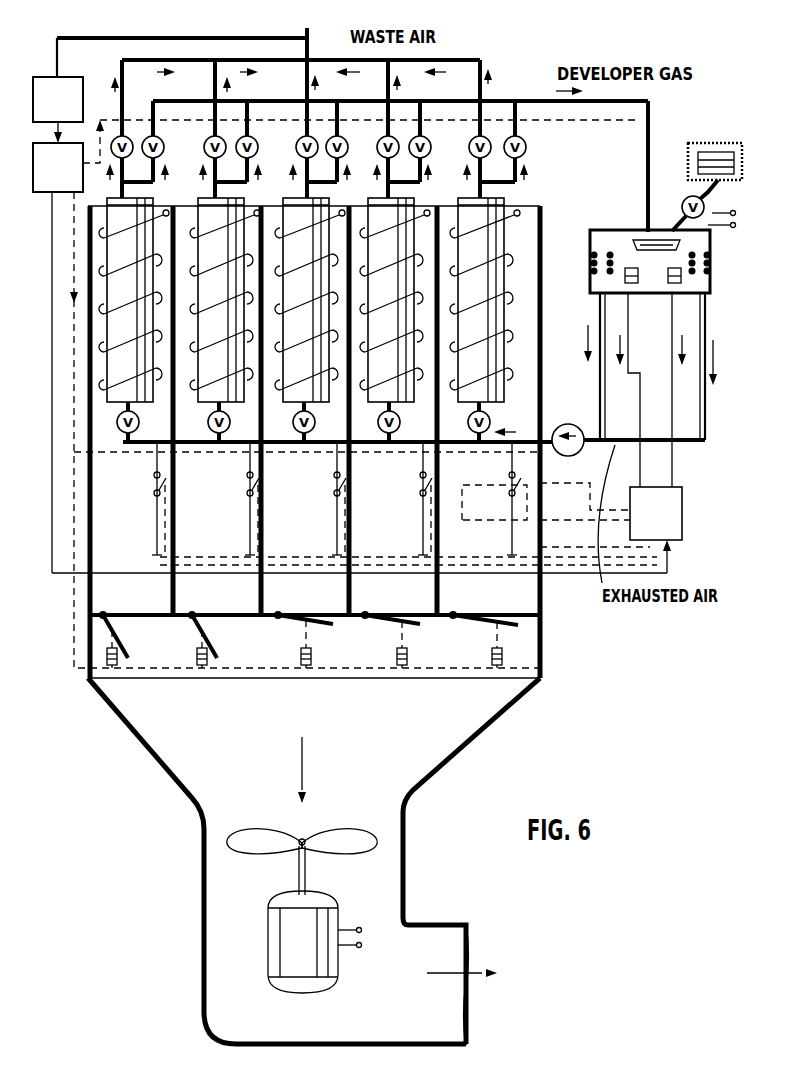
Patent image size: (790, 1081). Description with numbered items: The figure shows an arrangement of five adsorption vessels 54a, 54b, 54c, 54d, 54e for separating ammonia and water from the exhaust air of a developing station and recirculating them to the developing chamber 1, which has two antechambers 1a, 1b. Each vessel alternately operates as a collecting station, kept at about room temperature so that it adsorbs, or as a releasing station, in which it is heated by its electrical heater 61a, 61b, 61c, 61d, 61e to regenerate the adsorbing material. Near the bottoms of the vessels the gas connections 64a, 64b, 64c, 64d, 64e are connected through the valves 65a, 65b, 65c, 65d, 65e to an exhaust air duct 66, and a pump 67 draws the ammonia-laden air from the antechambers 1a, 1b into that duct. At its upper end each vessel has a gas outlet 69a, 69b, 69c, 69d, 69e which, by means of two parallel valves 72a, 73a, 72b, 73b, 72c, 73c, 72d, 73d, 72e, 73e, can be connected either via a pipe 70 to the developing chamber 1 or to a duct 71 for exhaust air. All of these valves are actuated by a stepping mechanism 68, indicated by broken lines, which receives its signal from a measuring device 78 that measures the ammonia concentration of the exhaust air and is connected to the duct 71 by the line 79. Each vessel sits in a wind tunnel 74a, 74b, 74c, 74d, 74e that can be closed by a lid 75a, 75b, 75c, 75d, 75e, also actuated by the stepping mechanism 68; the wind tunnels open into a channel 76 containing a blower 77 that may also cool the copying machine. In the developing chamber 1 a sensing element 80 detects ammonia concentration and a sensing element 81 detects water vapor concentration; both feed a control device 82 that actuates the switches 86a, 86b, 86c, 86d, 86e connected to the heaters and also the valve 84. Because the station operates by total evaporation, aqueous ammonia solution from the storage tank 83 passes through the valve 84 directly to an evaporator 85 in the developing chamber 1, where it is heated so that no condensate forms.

The developing chamber 1 is at (654, 273).
The antechamber 1a is at (600, 277).
The antechamber 1b is at (700, 281).
The adsorption vessel 54a is at (139, 243).
The adsorption vessel 54b is at (230, 243).
The adsorption vessel 54c is at (315, 243).
The adsorption vessel 54d is at (400, 243).
The adsorption vessel 54e is at (490, 243).
The electrical heater 61a is at (131, 305).
The electrical heater 61b is at (222, 305).
The electrical heater 61c is at (307, 305).
The electrical heater 61d is at (392, 305).
The electrical heater 61e is at (482, 305).
The gas connection 64a is at (118, 412).
The gas connection 64b is at (209, 420).
The gas connection 64c is at (294, 420).
The gas connection 64d is at (379, 420).
The gas connection 64e is at (495, 412).
The valve 65a is at (158, 480).
The valve 65b is at (246, 479).
The valve 65c is at (333, 478).
The valve 65d is at (419, 478).
The valve 65e is at (509, 478).
The exhaust air duct 66 is at (546, 456).
The pump 67 is at (574, 424).
The stepping mechanism 68 is at (48, 185).
The gas outlet 69a is at (120, 190).
The gas outlet 69b is at (212, 189).
The gas outlet 69c is at (300, 190).
The gas outlet 69d is at (408, 187).
The gas outlet 69e is at (492, 187).
The pipe 70 is at (527, 99).
The duct for exhaust air 71 is at (313, 34).
The valve 72a is at (118, 134).
The valve 72b is at (207, 150).
The valve 72c is at (299, 154).
The valve 72d is at (385, 151).
The valve 72e is at (470, 151).
The valve 73a is at (158, 141).
The valve 73b is at (254, 142).
The valve 73c is at (345, 146).
The valve 73d is at (428, 144).
The valve 73e is at (527, 143).
The wind tunnel 74a is at (110, 588).
The wind tunnel 74b is at (236, 604).
The wind tunnel 74c is at (330, 604).
The wind tunnel 74d is at (420, 604).
The wind tunnel 74e is at (545, 606).
The lid 75a is at (116, 641).
The lid 75b is at (199, 633).
The lid 75c is at (298, 627).
The lid 75d is at (390, 621).
The lid 75e is at (488, 621).
The channel 76 is at (447, 745).
The blower 77 is at (340, 917).
The measuring device 78 is at (47, 83).
The line 79 is at (172, 37).
The sensing element 80 is at (605, 291).
The sensing element 81 is at (684, 294).
The control device 82 is at (682, 528).
The storage tank 83 is at (692, 168).
The valve 84 is at (686, 198).
The evaporator 85 is at (640, 232).
The switch 86a is at (155, 493).
The switch 86b is at (248, 494).
The switch 86c is at (334, 494).
The switch 86d is at (420, 494).
The switch 86e is at (511, 494).